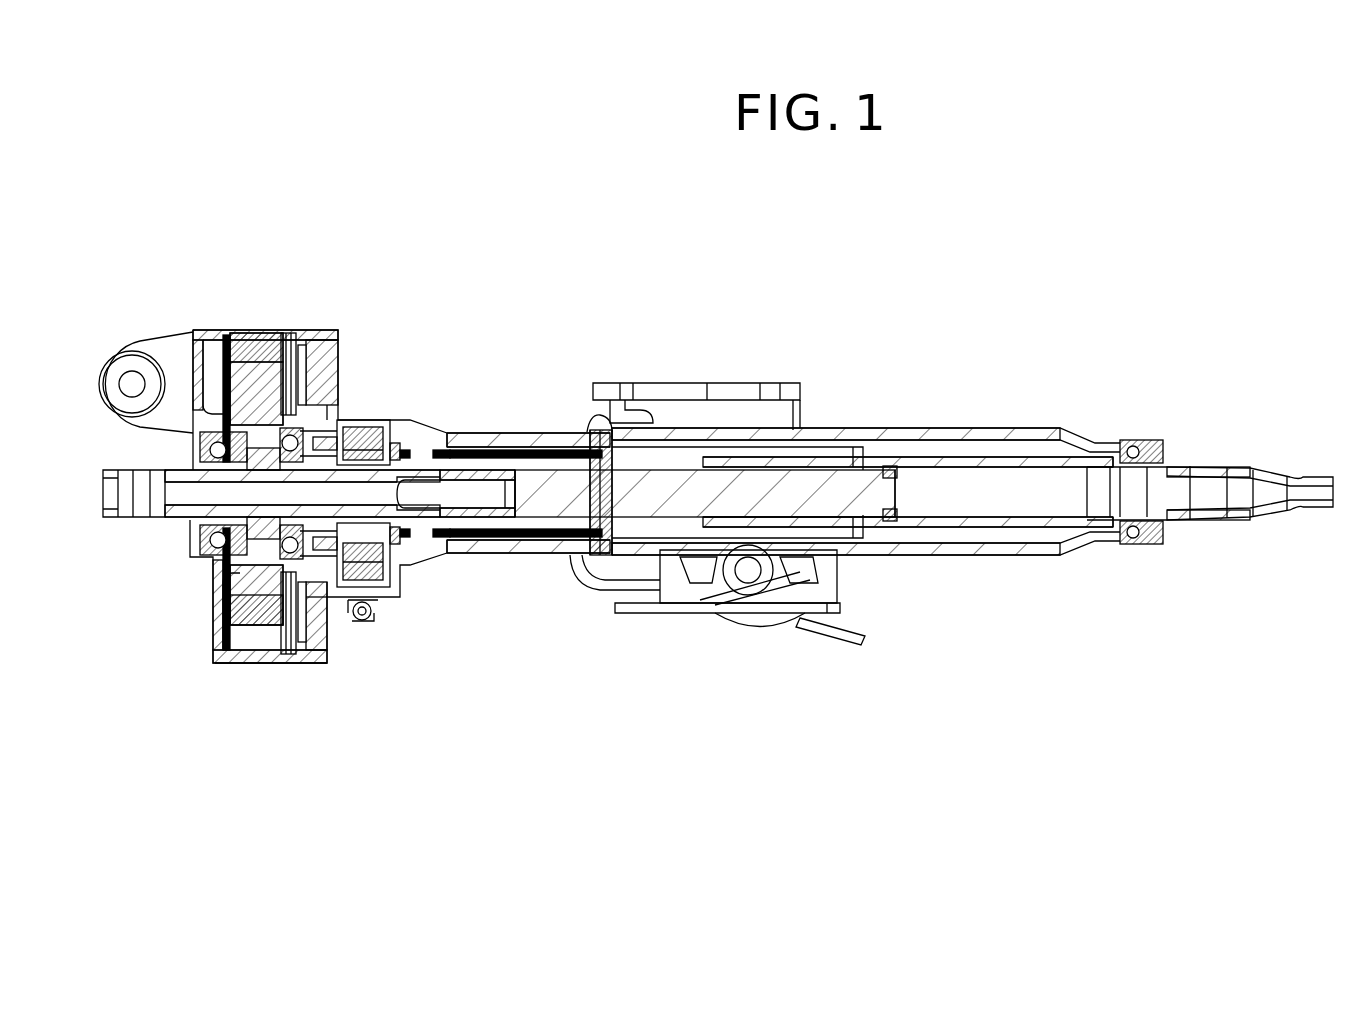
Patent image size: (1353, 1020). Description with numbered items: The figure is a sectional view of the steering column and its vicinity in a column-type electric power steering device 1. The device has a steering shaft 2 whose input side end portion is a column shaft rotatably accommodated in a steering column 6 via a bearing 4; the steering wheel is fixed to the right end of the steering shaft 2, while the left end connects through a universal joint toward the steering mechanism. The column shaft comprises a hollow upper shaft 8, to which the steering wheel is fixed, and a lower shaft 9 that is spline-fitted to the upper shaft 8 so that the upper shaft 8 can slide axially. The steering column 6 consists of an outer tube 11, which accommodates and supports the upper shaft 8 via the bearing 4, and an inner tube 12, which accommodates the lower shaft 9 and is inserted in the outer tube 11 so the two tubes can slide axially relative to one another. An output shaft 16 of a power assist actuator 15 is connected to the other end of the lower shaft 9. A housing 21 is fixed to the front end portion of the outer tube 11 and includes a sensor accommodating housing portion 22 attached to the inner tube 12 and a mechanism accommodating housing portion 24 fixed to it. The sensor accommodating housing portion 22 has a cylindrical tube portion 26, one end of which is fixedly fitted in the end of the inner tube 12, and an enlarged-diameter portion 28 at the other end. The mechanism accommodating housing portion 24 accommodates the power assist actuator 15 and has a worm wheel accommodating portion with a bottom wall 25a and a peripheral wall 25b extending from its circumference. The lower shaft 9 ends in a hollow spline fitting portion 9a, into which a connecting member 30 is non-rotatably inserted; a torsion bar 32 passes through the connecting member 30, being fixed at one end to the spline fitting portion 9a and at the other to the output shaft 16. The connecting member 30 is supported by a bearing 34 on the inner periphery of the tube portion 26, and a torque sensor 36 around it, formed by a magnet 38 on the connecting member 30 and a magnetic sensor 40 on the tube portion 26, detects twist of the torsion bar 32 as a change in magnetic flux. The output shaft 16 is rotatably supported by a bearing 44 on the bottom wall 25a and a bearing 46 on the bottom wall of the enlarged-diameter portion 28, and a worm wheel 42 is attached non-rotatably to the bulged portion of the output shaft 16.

The electric power steering device 1 is at (1251, 265).
The steering shaft 2 is at (1281, 452).
The bearing 4 is at (1133, 440).
The steering column 6 is at (1030, 369).
The upper shaft 8 is at (1044, 458).
The lower shaft 9 is at (914, 490).
The spline fitting portion 9a is at (480, 476).
The outer tube 11 is at (928, 430).
The inner tube 12 is at (850, 428).
The power assist actuator 15 is at (346, 292).
The output shaft 16 is at (113, 520).
The housing 21 is at (326, 272).
The sensor accommodating housing portion 22 is at (325, 330).
The mechanism accommodating housing portion 24 is at (243, 330).
The bottom wall 25a is at (222, 620).
The peripheral wall 25b is at (236, 330).
The tube portion 26 is at (496, 560).
The enlarged-diameter portion 28 is at (320, 650).
The connecting member 30 is at (513, 552).
The torsion bar 32 is at (468, 550).
The bearing 34 is at (420, 565).
The torque sensor 36 is at (375, 620).
The magnet 38 is at (398, 428).
The magnetic sensor 40 is at (362, 427).
The worm wheel 42 is at (250, 665).
The bearing 44 is at (210, 557).
The bearing 46 is at (325, 440).